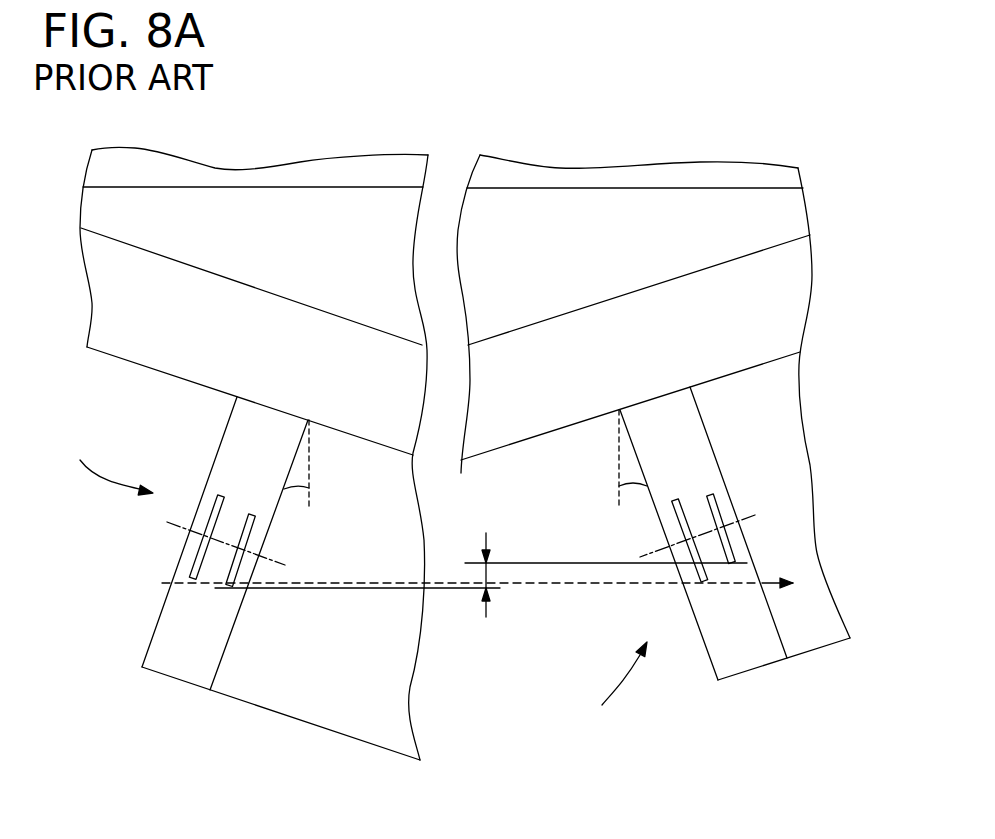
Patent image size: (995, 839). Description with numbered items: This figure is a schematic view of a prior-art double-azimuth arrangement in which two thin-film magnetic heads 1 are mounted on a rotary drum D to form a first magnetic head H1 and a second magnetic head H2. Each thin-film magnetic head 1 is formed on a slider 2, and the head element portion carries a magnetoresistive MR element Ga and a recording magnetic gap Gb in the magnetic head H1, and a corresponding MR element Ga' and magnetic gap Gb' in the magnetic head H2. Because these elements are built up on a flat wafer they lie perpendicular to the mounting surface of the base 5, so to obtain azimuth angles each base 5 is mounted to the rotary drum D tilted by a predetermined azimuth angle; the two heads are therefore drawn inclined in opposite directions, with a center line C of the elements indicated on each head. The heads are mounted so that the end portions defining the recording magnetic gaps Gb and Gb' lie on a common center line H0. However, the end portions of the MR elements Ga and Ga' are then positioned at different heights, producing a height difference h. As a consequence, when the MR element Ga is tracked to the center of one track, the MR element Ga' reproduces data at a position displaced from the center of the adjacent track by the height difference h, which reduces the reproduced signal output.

The base 5 is at (117, 305).
The rotary drum D is at (347, 173).
The thin-film magnetic head 1 is at (163, 690).
The slider 2 is at (317, 728).
The MR element Ga is at (220, 493).
The magnetic gap Gb is at (192, 506).
The MR element Ga' is at (747, 496).
The magnetic gap Gb' is at (716, 490).
The center line of nozzle arrays C is at (459, 532).
The magnetic head H1 is at (100, 464).
The magnetic head H2 is at (617, 691).
The height difference h is at (483, 577).
The center line H0 is at (543, 584).